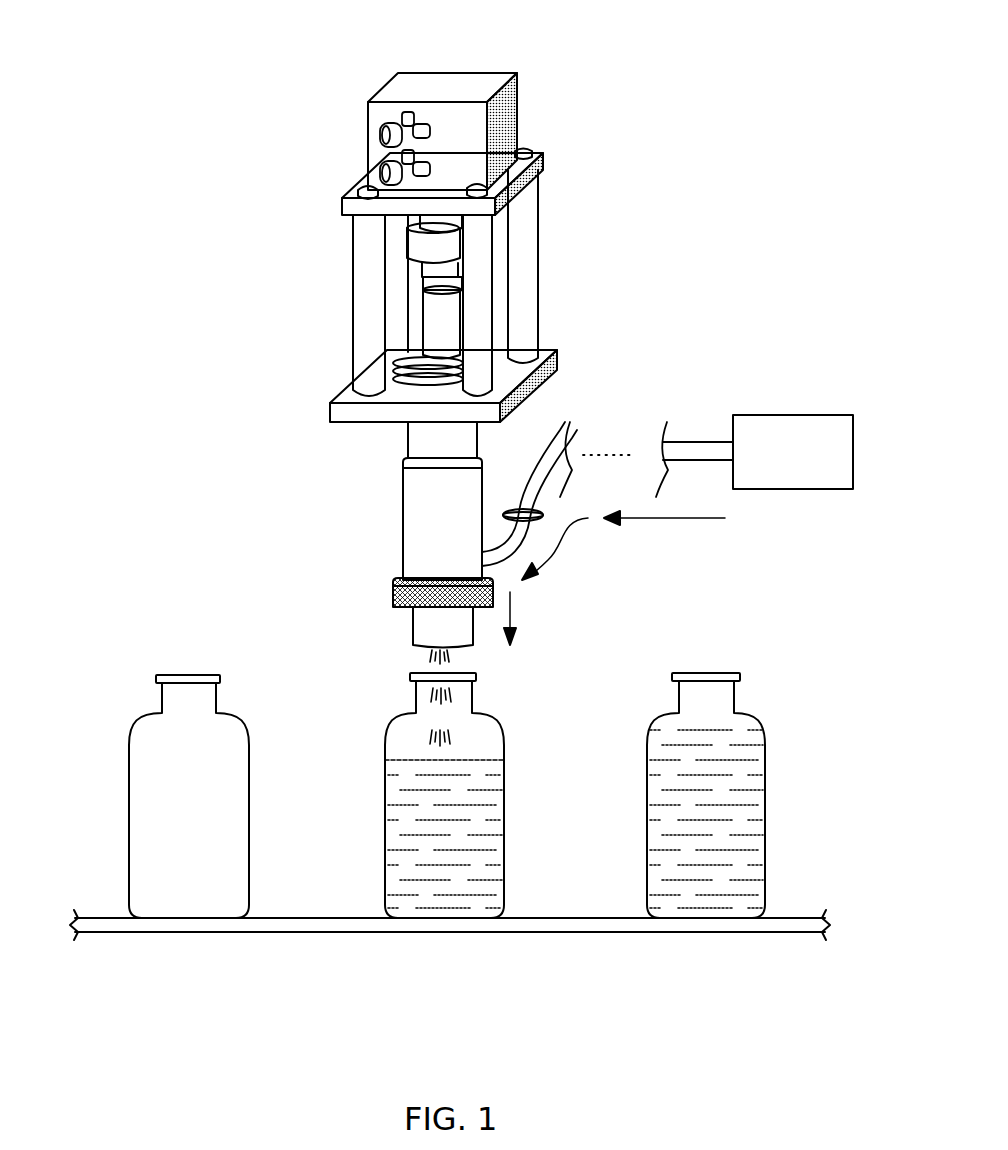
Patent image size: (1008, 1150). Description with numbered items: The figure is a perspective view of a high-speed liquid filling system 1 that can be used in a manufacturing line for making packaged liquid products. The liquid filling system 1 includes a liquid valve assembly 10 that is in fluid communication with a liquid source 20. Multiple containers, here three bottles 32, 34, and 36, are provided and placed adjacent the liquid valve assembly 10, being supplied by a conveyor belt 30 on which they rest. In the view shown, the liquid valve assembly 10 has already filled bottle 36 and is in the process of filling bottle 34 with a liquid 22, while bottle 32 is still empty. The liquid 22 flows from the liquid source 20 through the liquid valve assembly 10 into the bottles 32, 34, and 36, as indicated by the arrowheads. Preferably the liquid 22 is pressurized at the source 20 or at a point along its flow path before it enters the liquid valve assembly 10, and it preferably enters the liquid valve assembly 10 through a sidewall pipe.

The high-speed liquid filling system 1 is at (743, 132).
The liquid valve assembly 10 is at (320, 128).
The liquid source 20 is at (778, 432).
The liquid 22 is at (460, 652).
The conveyor belt 30 is at (120, 932).
The bottle 32 is at (248, 843).
The bottle 34 is at (504, 843).
The bottle 36 is at (765, 843).